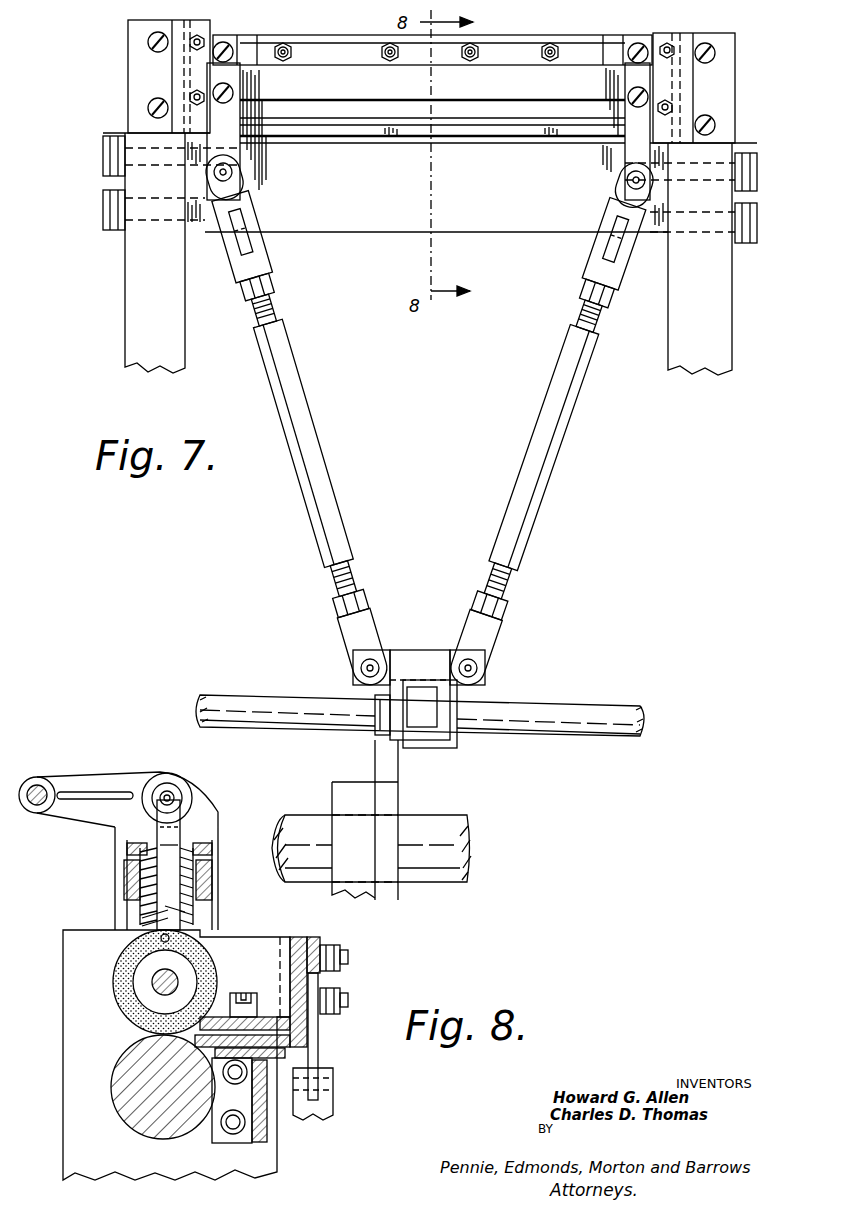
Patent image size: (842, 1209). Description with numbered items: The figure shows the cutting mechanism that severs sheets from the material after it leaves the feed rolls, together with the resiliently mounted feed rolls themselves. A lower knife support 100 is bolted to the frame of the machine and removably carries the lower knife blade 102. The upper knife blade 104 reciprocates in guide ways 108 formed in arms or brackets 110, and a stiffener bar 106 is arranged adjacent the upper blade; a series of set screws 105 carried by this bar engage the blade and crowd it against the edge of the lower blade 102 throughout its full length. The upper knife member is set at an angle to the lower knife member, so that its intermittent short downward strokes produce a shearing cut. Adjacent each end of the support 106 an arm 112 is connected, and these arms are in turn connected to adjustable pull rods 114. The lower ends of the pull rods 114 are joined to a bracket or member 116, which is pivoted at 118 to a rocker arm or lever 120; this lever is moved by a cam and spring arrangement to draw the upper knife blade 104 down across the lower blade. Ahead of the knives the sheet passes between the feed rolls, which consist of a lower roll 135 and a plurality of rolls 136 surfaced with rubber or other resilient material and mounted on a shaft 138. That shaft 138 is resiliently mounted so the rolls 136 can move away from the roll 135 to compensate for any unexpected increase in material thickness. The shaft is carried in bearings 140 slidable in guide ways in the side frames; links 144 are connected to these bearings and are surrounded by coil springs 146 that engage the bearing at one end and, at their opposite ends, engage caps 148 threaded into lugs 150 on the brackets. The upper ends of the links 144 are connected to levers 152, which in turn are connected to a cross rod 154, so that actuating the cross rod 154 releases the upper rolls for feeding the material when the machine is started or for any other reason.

In FIG. 7, the lower knife support 100 is at (490, 228).
In FIG. 8, the lower knife support 100 is at (255, 1132).
In FIG. 7, the lower knife blade 102 is at (474, 136).
In FIG. 8, the lower knife blade 102 is at (295, 1040).
In FIG. 7, the upper knife blade 104 is at (524, 117).
In FIG. 8, the upper knife blade 104 is at (300, 985).
In FIG. 7, the set screws 105 is at (292, 45).
In FIG. 7, the stiffener bar 106 is at (580, 40).
In FIG. 8, the stiffener bar 106 is at (318, 950).
In FIG. 7, the guide ways 108 is at (183, 78).
In FIG. 8, the guide ways 108 is at (300, 937).
In FIG. 7, the arms or brackets 110 is at (128, 110).
In FIG. 7, the arm 112 is at (232, 148).
In FIG. 8, the arm 112 is at (316, 1028).
In FIG. 7, the adjustable pull rods 114 is at (303, 468).
In FIG. 7, the bracket or member 116 is at (420, 655).
In FIG. 7, the pivot 118 is at (338, 700).
In FIG. 7, the rocker arm or lever 120 is at (430, 730).
In FIG. 8, the lower roll 135 is at (128, 1118).
In FIG. 8, the rolls 136 is at (118, 1006).
In FIG. 8, the shaft 138 is at (152, 980).
In FIG. 8, the bearings 140 is at (130, 945).
In FIG. 8, the links 144 is at (172, 835).
In FIG. 8, the coil springs 146 is at (140, 904).
In FIG. 8, the caps 148 is at (126, 848).
In FIG. 8, the lugs 150 is at (208, 871).
In FIG. 8, the levers 152 is at (102, 775).
In FIG. 8, the cross rod 154 is at (40, 808).